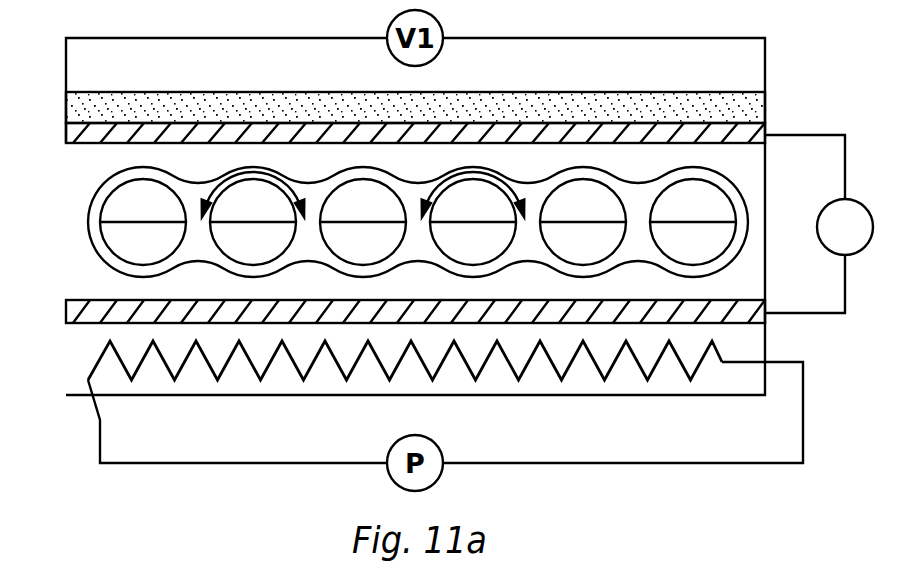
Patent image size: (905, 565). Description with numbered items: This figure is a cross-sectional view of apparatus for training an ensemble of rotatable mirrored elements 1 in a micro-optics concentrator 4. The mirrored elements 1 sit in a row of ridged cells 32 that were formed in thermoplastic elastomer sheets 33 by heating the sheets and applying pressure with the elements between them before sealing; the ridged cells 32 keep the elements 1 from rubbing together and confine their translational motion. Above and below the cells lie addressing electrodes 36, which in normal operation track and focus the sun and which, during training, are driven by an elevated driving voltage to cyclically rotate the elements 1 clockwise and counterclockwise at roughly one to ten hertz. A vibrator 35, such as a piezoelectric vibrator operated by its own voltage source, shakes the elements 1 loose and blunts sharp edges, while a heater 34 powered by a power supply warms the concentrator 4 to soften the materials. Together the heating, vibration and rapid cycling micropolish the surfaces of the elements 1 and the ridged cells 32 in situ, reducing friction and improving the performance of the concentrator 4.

The rotatable mirrored elements 1 is at (76, 232).
The micro-optics concentrator 4 is at (810, 183).
The ridged cells 32 is at (527, 187).
The thermoplastic elastomer sheets 33 is at (92, 166).
The heater 34 is at (518, 374).
The vibrator 35 is at (765, 103).
The addressing electrodes 36 is at (765, 126).